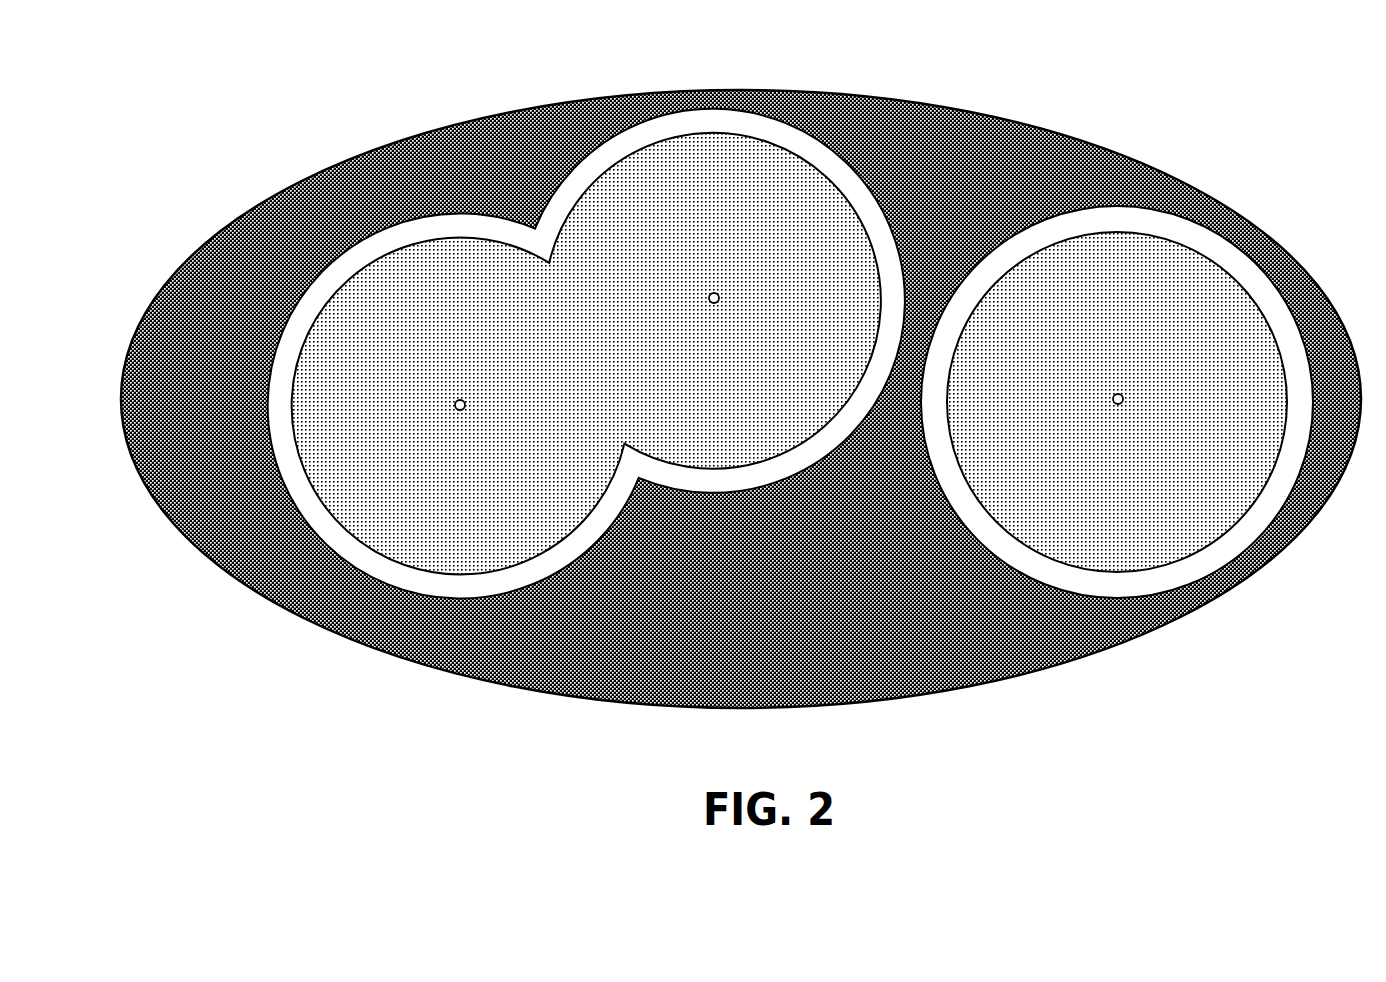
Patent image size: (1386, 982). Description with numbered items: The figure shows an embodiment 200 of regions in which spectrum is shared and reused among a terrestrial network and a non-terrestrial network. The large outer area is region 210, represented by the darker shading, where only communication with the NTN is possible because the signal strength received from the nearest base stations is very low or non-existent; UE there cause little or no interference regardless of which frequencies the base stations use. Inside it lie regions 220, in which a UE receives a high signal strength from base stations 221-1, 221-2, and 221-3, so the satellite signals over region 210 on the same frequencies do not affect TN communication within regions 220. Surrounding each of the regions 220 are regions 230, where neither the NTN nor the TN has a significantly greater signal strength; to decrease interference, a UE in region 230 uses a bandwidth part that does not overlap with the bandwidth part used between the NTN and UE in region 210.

The embodiment of regions in which spectrum is shared 200 is at (159, 97).
The region 210 is at (414, 137).
The regions 220 is at (748, 412).
The base station 221-1 is at (1119, 394).
The base station 221-2 is at (715, 293).
The base station 221-3 is at (461, 400).
The regions 230 is at (679, 107).